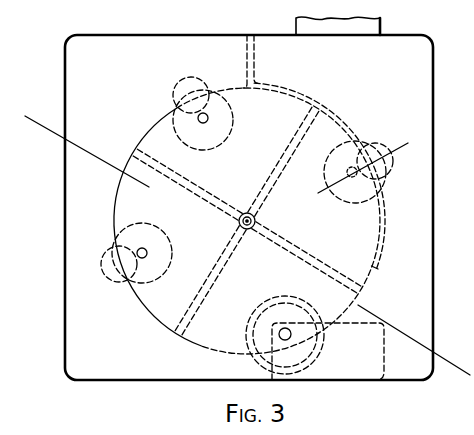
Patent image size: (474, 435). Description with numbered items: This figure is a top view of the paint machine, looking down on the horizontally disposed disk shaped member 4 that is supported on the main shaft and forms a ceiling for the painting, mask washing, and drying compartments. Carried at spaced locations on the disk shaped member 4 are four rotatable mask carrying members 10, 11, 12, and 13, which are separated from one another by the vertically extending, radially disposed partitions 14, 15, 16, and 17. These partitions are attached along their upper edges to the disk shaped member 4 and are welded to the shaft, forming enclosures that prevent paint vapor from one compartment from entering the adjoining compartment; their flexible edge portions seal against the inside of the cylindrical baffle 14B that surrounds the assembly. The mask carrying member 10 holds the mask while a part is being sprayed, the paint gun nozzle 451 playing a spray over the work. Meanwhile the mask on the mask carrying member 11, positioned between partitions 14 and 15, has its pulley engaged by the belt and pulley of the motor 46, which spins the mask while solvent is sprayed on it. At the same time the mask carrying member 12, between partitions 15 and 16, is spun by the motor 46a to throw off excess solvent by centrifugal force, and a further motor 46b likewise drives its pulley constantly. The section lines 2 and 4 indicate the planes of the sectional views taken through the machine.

The section line 2- 2 is at (41, 123).
The disk shaped member 4 is at (300, 168).
The mask carrying member 10 is at (290, 330).
The mask carrying member 11 is at (352, 188).
The mask carrying member 12 is at (209, 118).
The mask carrying member 13 is at (147, 252).
The partition 14 is at (328, 267).
The cylindrical baffle 14B is at (325, 109).
The partition 15 is at (281, 174).
The partition 16 is at (203, 190).
The partition 17 is at (217, 279).
The motor 46 is at (391, 178).
The motor 46a is at (175, 90).
The motor 46b is at (112, 287).
The nozzle 451 is at (381, 34).